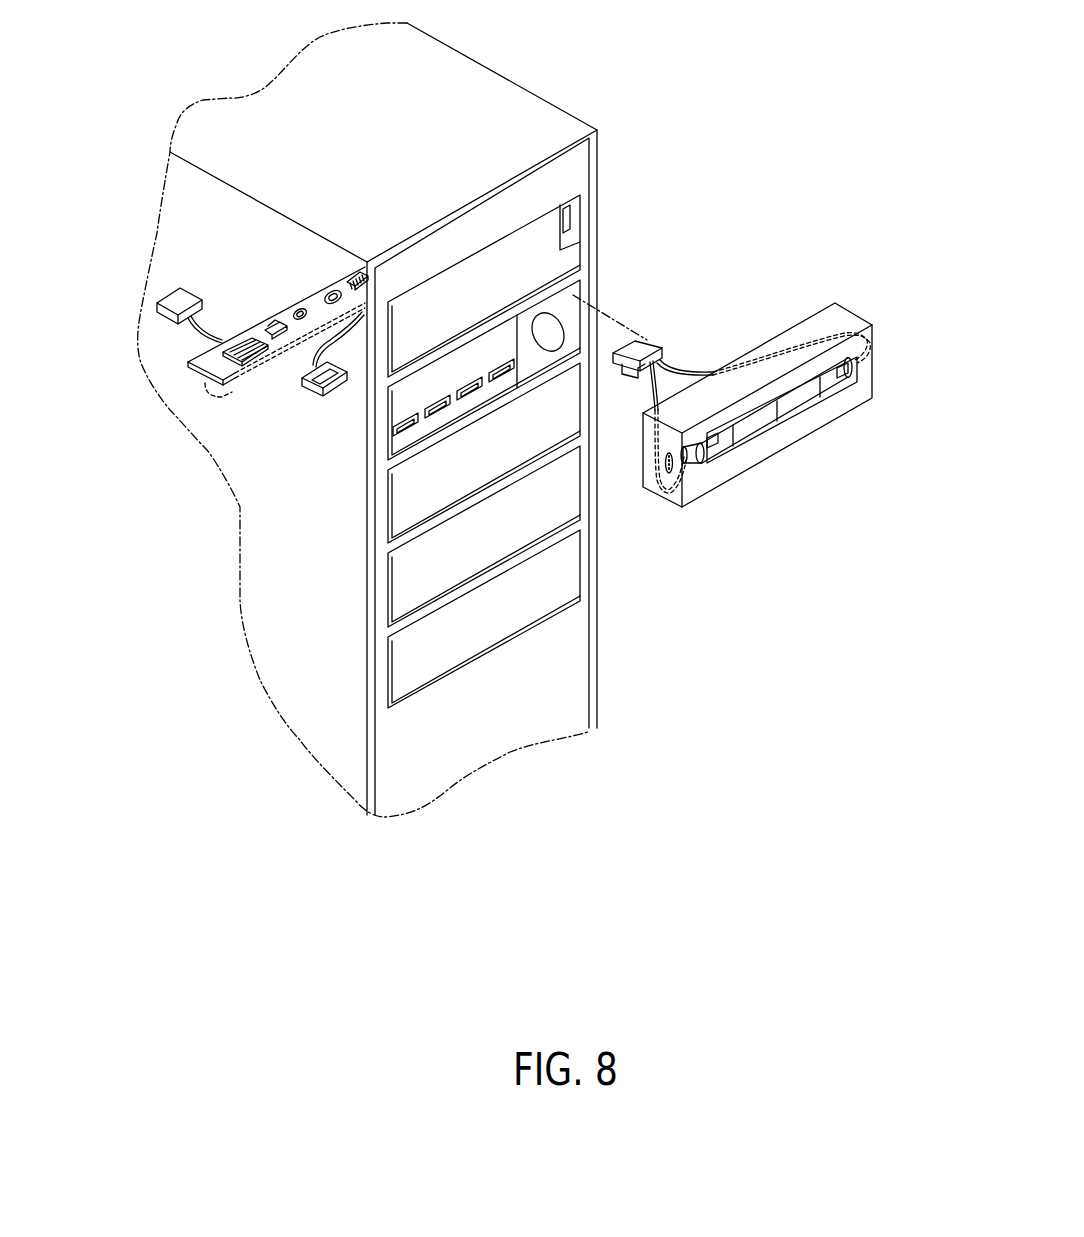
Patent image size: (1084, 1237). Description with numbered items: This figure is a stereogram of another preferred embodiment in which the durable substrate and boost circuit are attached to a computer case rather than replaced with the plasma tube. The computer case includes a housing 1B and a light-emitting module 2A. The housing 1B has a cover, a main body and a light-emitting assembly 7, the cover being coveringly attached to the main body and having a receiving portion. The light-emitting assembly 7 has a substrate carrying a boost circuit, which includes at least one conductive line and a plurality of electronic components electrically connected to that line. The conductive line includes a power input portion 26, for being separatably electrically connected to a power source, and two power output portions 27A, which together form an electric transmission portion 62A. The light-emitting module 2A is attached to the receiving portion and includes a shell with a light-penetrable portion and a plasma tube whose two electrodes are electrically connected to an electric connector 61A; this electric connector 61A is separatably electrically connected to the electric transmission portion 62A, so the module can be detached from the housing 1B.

The housing 1B is at (445, 68).
The light-emitting assembly 7 is at (307, 285).
The power input portion 26 is at (187, 290).
The power output portions 27A is at (232, 391).
The electric transmission portion 62A is at (310, 390).
The electric connector 61A is at (660, 347).
The light-emitting module 2A is at (790, 322).